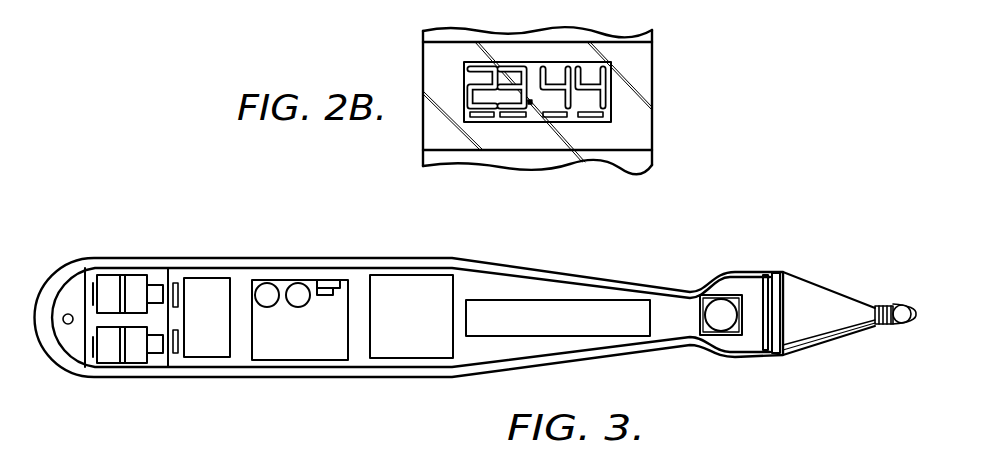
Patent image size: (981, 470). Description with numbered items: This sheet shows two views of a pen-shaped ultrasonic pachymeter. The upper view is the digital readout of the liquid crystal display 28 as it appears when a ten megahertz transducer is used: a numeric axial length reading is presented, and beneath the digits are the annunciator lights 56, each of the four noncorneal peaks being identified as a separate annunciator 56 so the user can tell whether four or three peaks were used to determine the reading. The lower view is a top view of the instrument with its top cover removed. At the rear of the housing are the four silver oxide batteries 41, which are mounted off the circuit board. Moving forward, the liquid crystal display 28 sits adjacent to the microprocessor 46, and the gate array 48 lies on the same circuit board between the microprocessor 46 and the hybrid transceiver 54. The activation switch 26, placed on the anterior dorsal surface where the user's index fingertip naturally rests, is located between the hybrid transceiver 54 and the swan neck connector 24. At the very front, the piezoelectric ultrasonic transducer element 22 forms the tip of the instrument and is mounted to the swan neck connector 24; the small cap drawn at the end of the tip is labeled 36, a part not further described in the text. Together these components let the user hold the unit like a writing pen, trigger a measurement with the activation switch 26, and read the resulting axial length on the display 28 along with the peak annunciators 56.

In FIG. 3, the piezoelectric ultrasonic transducer element 22 is at (910, 306).
In FIG. 3, the swan neck connector 24 is at (820, 300).
In FIG. 3, the activation button 26 is at (725, 300).
In FIG. 2B, the liquid crystal display 28 is at (642, 65).
In FIG. 3, the liquid crystal display 28 is at (212, 280).
In FIG. 3, the tip cap 36 is at (912, 328).
In FIG. 3, the silver oxide batteries 41 is at (137, 277).
In FIG. 3, the microprocessor 46 is at (312, 352).
In FIG. 3, the gate array 48 is at (417, 350).
In FIG. 3, the hybrid transceiver 54 is at (613, 300).
In FIG. 2B, the annunciator lights 56 is at (513, 117).